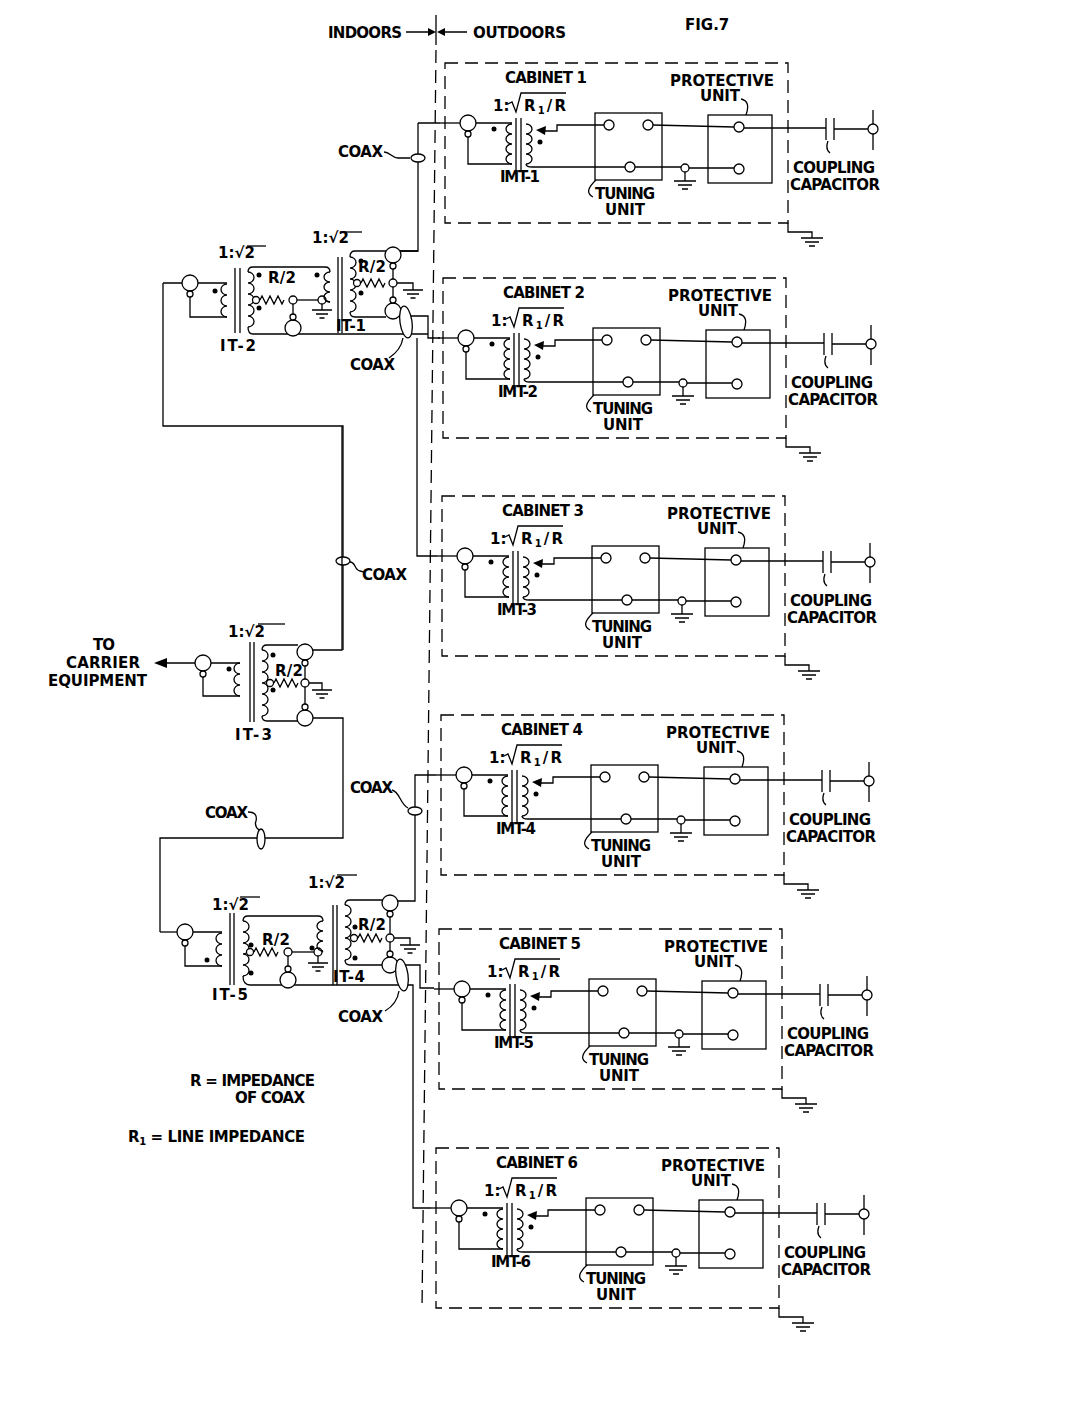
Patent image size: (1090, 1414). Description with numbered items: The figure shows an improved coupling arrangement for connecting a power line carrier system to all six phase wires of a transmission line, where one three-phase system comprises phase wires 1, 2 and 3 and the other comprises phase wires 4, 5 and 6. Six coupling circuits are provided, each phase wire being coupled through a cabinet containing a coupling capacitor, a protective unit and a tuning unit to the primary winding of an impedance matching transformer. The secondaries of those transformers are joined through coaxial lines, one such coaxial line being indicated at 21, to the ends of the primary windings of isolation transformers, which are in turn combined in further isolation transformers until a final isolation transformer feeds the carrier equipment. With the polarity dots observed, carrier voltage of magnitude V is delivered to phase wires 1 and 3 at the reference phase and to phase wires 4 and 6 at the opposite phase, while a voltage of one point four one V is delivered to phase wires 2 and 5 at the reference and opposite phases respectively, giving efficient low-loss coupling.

The coaxial cable 21 is at (418, 200).
The phase wire 1 is at (877, 120).
The phase wire 2 is at (874, 553).
The phase wire 3 is at (871, 986).
The phase wire 4 is at (875, 335).
The phase wire 5 is at (868, 1205).
The phase wire 6 is at (873, 772).